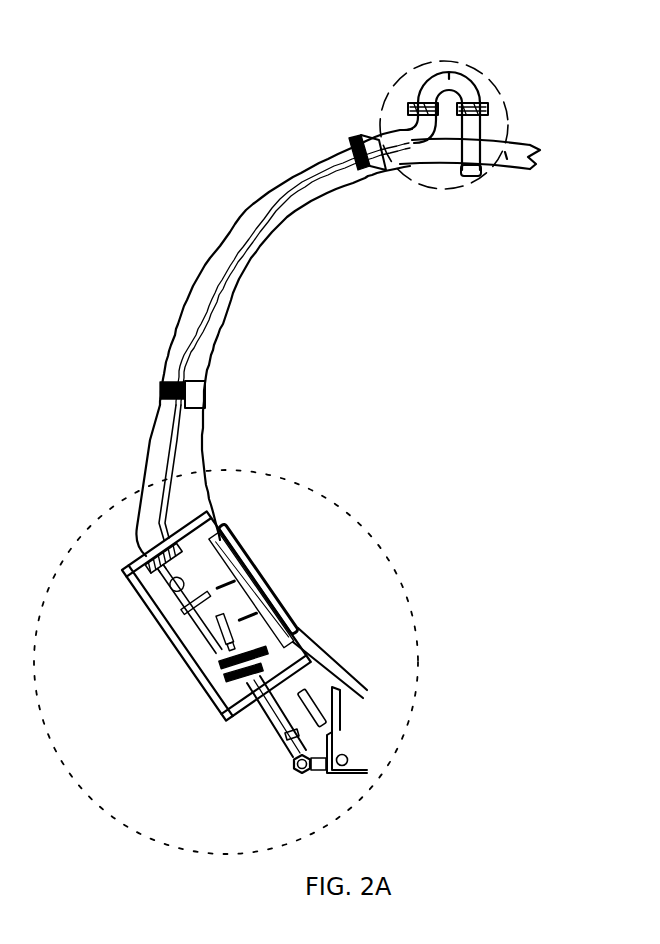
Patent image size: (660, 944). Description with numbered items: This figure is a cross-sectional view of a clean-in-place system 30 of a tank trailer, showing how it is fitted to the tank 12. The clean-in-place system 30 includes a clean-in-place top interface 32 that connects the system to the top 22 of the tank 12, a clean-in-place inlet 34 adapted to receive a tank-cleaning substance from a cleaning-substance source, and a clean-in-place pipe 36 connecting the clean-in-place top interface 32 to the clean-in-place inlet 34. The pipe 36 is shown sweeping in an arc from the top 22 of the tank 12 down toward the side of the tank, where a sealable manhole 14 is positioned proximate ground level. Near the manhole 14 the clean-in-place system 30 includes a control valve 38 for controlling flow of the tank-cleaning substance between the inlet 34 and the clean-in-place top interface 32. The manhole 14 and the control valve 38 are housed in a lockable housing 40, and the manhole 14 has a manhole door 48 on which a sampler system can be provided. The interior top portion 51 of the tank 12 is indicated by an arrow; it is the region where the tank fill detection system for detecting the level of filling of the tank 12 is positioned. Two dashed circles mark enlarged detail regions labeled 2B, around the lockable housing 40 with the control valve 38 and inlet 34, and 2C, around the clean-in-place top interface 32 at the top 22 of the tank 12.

The tank 12 is at (237, 277).
The sealable manhole 14 is at (297, 592).
The top of the tank 22 is at (520, 139).
The clean-in-place system 30 is at (242, 205).
The clean-in-place top interface 32 is at (489, 128).
The clean-in-place inlet 34 is at (297, 775).
The clean-in-place pipe 36 is at (163, 428).
The control valve 38 is at (228, 720).
The lockable housing 40 is at (143, 600).
The manhole door 48 is at (303, 637).
The interior top portion of the tank 51 is at (501, 226).
The detail view circle 2B is at (408, 633).
The detail view circle 2C is at (480, 68).